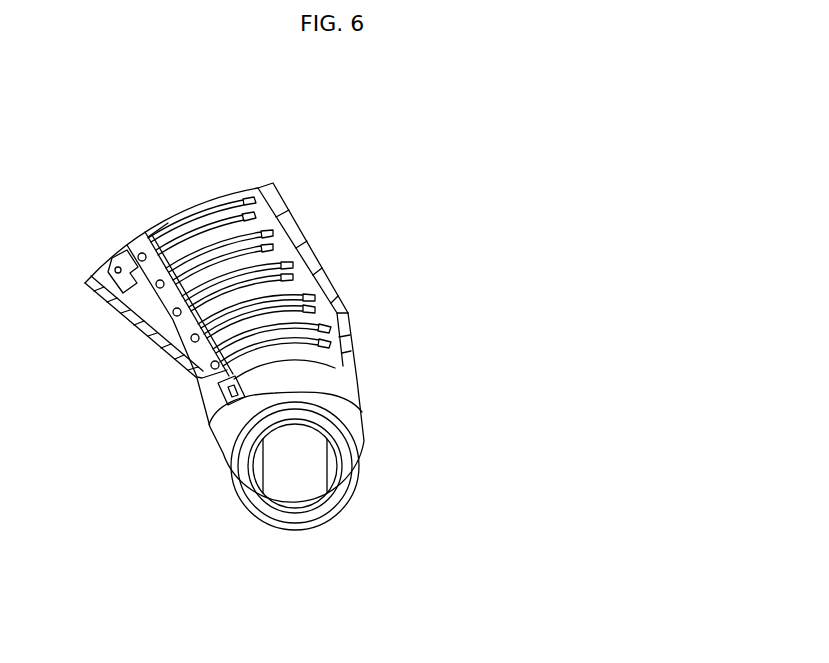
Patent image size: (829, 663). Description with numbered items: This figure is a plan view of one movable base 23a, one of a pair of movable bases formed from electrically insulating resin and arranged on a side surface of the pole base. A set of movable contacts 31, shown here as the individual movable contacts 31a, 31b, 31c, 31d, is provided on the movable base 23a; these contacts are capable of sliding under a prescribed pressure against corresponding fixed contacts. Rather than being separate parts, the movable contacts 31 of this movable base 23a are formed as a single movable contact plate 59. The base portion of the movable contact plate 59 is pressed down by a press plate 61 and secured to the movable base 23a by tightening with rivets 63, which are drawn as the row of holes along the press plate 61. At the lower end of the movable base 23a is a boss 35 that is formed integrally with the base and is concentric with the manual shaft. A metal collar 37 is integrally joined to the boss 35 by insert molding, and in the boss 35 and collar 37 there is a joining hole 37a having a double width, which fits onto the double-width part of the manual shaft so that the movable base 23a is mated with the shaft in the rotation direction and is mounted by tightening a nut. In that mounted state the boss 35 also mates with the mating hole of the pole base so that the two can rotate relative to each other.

The movable contact plate 59 is at (156, 221).
The movable contact 31a is at (210, 205).
The movable contact 31b is at (239, 212).
The movable contact 31c is at (282, 262).
The movable contact 31d is at (332, 276).
The movable contacts 31 is at (348, 320).
The movable base 23a is at (324, 254).
The press plate 61 is at (140, 305).
The rivets 63 is at (172, 310).
The boss 35 is at (370, 487).
The collar 37 is at (349, 460).
The joining hole 37a is at (324, 467).